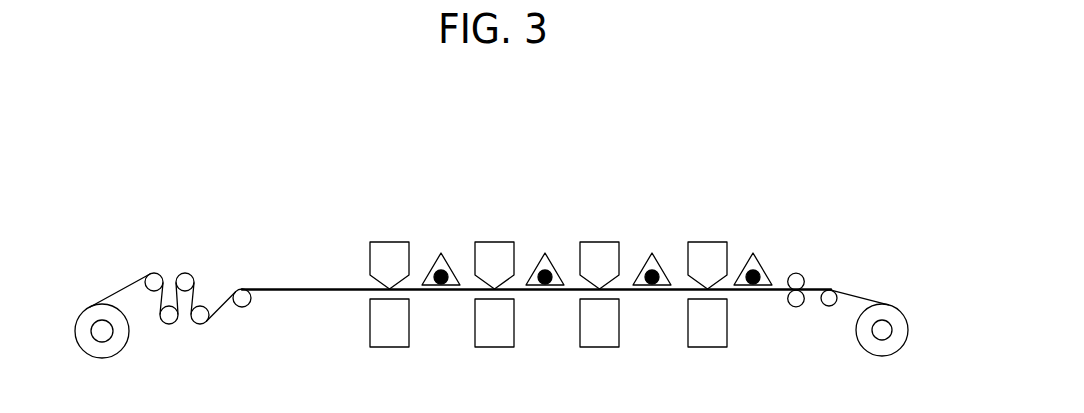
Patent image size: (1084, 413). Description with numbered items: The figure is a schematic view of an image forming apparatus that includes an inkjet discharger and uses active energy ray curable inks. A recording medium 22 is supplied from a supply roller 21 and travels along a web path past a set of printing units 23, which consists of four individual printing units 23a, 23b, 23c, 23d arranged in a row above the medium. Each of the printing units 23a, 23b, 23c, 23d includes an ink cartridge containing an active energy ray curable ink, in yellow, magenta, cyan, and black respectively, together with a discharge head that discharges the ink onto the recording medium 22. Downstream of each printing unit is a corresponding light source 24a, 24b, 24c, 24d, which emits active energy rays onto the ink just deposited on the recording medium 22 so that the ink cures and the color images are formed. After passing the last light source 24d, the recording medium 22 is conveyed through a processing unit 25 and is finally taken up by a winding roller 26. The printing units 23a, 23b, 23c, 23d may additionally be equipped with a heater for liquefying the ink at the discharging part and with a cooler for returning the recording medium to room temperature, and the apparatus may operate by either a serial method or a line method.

The supply roller 21 is at (102, 336).
The recording medium 22 is at (290, 288).
The printing units 23 is at (772, 190).
The printing unit 23a is at (389, 250).
The printing unit 23b is at (494, 250).
The printing unit 23c is at (599, 250).
The printing unit 23d is at (707, 250).
The light source 24a is at (436, 256).
The light source 24b is at (540, 256).
The light source 24c is at (647, 256).
The light source 24d is at (748, 256).
The processing unit 25 is at (797, 269).
The winding roller 26 is at (883, 338).